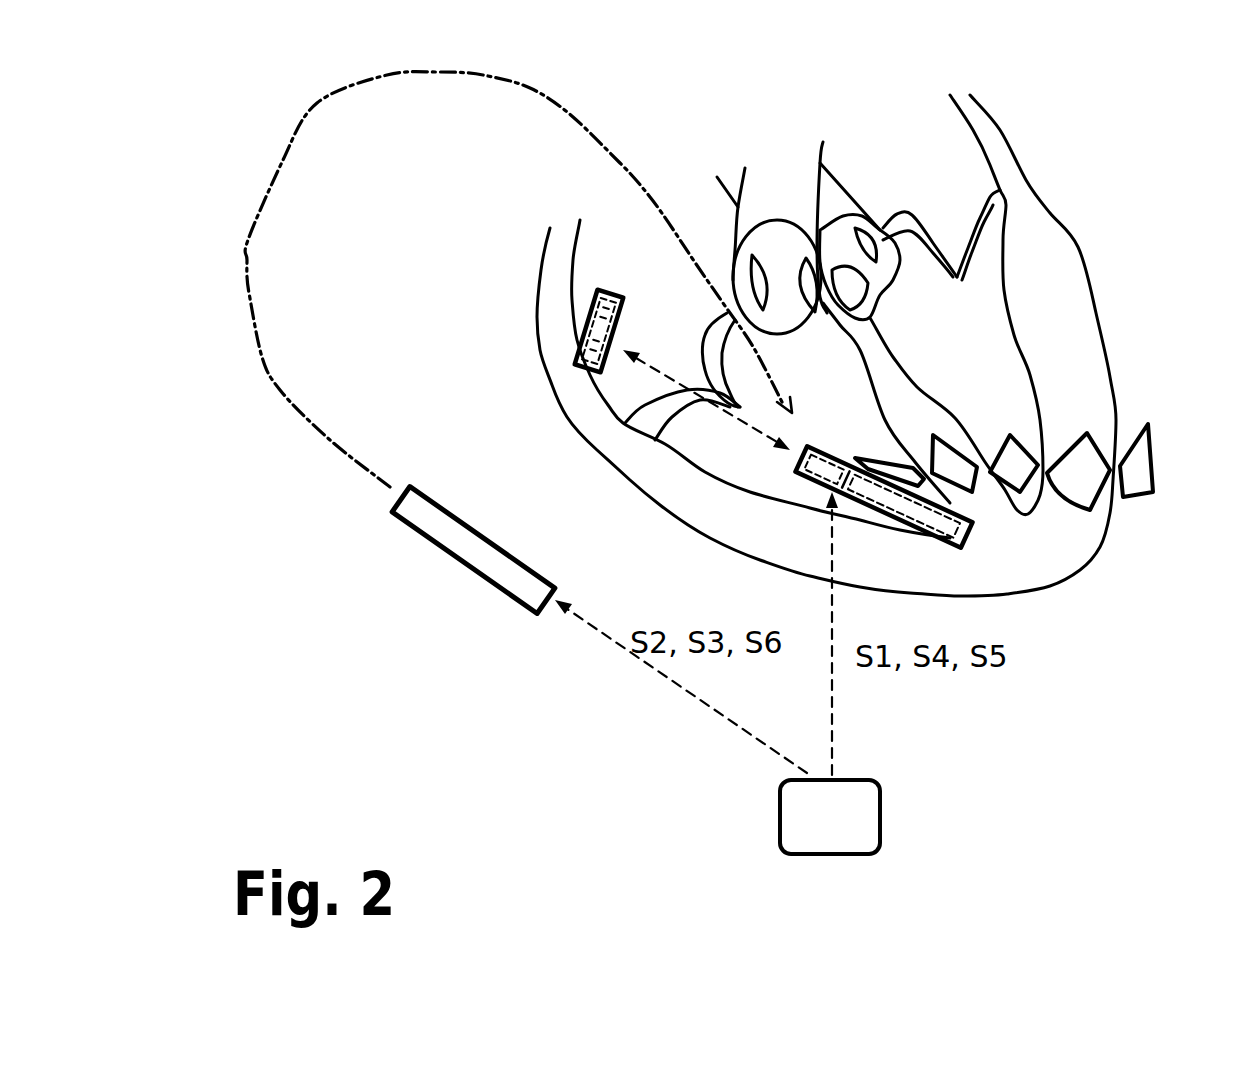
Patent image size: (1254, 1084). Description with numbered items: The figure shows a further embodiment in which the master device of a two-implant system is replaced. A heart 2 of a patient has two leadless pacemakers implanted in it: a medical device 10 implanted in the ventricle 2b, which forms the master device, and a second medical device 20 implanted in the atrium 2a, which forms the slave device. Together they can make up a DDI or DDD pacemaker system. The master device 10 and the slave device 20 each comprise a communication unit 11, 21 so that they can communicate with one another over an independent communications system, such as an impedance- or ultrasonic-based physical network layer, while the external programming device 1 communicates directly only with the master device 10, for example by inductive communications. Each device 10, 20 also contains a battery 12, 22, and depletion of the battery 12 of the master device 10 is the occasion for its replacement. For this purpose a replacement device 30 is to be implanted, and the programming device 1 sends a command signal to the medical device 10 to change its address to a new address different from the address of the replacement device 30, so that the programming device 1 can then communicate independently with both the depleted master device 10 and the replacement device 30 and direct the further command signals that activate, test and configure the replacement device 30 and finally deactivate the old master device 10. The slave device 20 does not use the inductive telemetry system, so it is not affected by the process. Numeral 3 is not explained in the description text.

The programming device 1 is at (810, 813).
The heart 2 is at (1047, 247).
The atrium 2a is at (657, 278).
The ventricle 2b is at (817, 362).
The patient body region 3 is at (447, 400).
The medical device 10 is at (980, 543).
The communication unit 11 is at (827, 467).
The battery 12 is at (903, 510).
The medical device 20 is at (578, 297).
The communication unit 21 is at (590, 312).
The battery 22 is at (585, 368).
The replacement device 30 is at (438, 555).